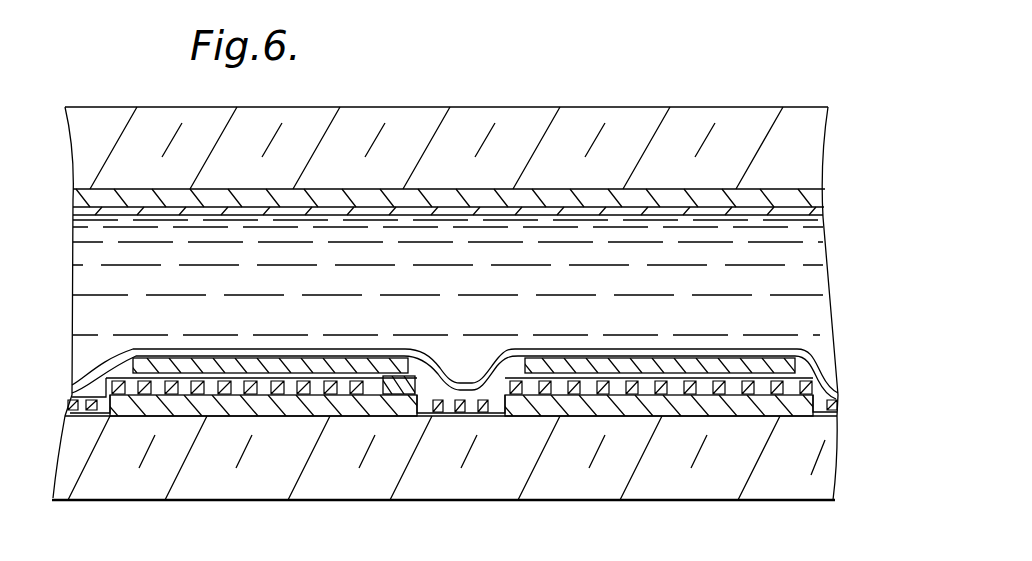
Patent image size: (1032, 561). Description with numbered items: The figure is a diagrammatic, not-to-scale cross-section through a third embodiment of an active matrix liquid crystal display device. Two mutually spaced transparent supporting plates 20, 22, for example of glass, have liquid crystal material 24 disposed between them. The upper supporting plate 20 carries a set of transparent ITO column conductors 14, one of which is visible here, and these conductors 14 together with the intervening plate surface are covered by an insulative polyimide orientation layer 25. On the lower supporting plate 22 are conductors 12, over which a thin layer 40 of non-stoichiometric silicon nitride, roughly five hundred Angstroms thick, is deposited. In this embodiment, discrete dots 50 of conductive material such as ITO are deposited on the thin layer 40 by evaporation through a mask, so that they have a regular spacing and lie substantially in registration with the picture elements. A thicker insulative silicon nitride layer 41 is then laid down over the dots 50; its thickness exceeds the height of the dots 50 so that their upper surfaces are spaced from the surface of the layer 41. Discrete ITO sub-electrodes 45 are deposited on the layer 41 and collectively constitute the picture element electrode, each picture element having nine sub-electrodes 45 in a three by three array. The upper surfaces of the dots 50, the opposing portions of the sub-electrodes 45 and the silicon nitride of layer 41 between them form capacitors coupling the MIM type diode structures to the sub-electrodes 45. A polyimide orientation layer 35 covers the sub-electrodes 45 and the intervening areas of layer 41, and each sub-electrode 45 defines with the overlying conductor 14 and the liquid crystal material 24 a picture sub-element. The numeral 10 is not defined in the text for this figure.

The upper supporting plate 20 is at (733, 117).
The column conductor 14 is at (780, 197).
The insulative orientation layer 25 is at (808, 213).
The liquid crystal material 24 is at (810, 250).
The pixel electrode 10 is at (145, 343).
The polyimide orientation layer 35 is at (815, 357).
The sub-electrode 45 is at (330, 357).
The thicker insulative layer 41 is at (405, 362).
The conductive dots 50 is at (93, 410).
The thin silicon nitride layer 40 is at (122, 397).
The conductor 12 is at (225, 405).
The lower supporting plate 22 is at (787, 485).